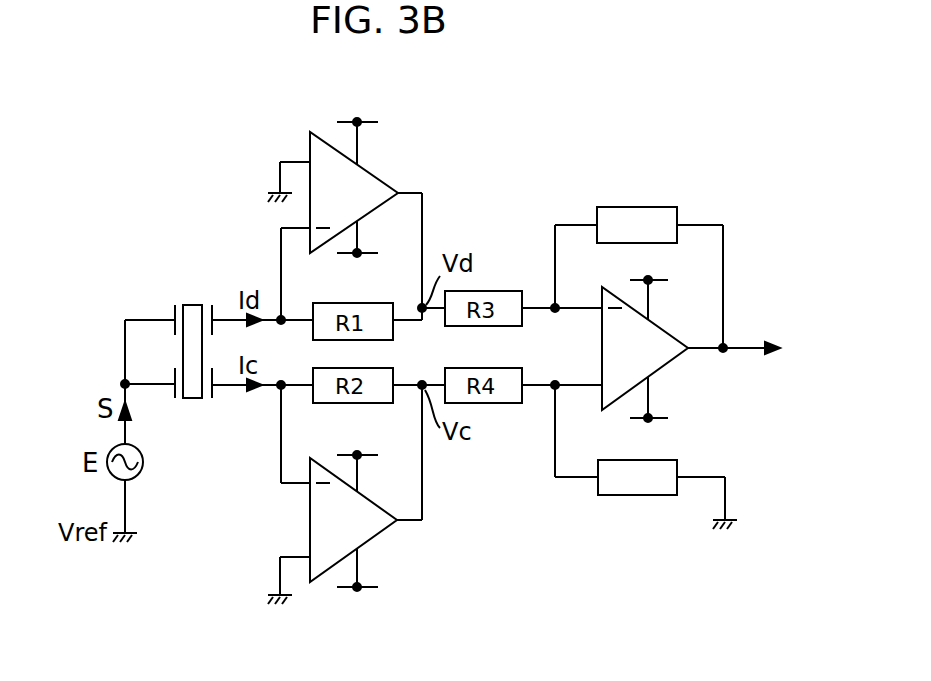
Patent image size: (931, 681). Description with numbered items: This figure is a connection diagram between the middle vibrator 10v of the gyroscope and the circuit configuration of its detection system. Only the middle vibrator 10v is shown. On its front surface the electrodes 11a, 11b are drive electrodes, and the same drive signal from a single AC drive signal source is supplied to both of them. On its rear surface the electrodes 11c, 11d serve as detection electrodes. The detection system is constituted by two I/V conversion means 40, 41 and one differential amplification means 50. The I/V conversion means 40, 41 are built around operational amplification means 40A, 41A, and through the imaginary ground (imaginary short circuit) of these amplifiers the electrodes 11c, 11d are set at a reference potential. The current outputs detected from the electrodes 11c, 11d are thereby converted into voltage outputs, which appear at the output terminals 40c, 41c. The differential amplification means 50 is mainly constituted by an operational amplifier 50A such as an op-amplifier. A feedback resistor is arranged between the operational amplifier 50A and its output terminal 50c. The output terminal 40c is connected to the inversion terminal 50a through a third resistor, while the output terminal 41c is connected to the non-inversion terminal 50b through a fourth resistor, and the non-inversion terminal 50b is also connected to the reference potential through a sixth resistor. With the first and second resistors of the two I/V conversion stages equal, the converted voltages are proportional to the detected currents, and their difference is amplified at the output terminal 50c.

The middle vibrator 10v is at (193, 290).
The electrode 11a is at (170, 387).
The electrode 11b is at (150, 318).
The electrode 11c is at (235, 387).
The electrode 11d is at (232, 316).
The I/V conversion means 40 is at (383, 203).
The operational amplification means 40A is at (357, 187).
The output terminal 40c is at (412, 193).
The I/V conversion means 41 is at (334, 520).
The operational amplification means 41A is at (328, 518).
The output terminal 41c is at (410, 522).
The differential amplification means 50 is at (667, 319).
The operational amplifier 50A is at (637, 356).
The inversion terminal 50a is at (580, 306).
The non-inversion terminal 50b is at (581, 389).
The output terminal 50c is at (700, 346).